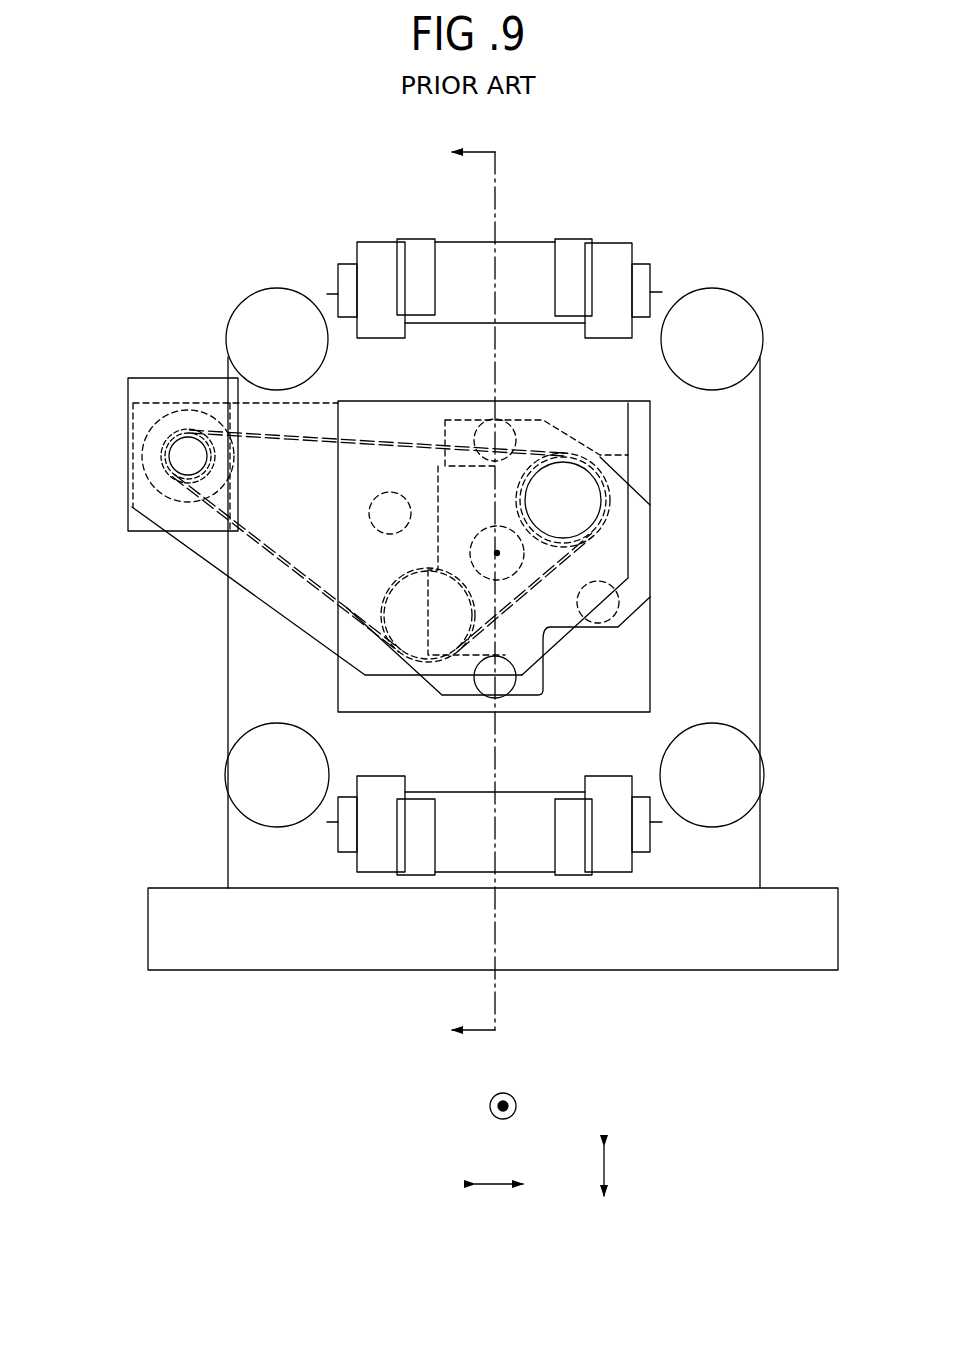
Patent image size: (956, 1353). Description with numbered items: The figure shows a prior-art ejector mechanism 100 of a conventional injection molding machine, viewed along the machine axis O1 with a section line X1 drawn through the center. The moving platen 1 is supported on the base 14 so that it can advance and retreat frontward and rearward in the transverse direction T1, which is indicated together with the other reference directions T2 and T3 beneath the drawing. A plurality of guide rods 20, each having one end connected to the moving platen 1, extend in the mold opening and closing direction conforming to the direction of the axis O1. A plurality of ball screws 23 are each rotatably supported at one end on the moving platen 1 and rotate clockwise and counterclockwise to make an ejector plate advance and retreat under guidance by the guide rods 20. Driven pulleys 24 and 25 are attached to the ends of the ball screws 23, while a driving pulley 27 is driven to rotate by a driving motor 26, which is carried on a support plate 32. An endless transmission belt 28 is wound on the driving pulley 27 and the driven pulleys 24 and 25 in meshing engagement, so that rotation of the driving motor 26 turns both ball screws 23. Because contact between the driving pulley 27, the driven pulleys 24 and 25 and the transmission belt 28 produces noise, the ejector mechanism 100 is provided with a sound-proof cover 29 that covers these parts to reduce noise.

The moving platen 1 is at (632, 243).
The base 14 is at (212, 945).
The guide rods 20 is at (371, 497).
The ball screws 23 is at (568, 477).
The driven pulley 24 is at (580, 500).
The driven pulley 25 is at (428, 660).
The driving motor 26 is at (163, 412).
The driving pulley 27 is at (173, 468).
The transmission belt 28 is at (258, 537).
The sound-proof cover 29 is at (262, 611).
The support plate 32 is at (128, 380).
The ejector mechanism 100 is at (632, 449).
The axis of the injection molding machine O1 is at (497, 553).
The section line X1 is at (444, 594).
The transverse direction T1 is at (515, 1102).
The direction T2 is at (499, 1210).
The direction T3 is at (628, 1171).